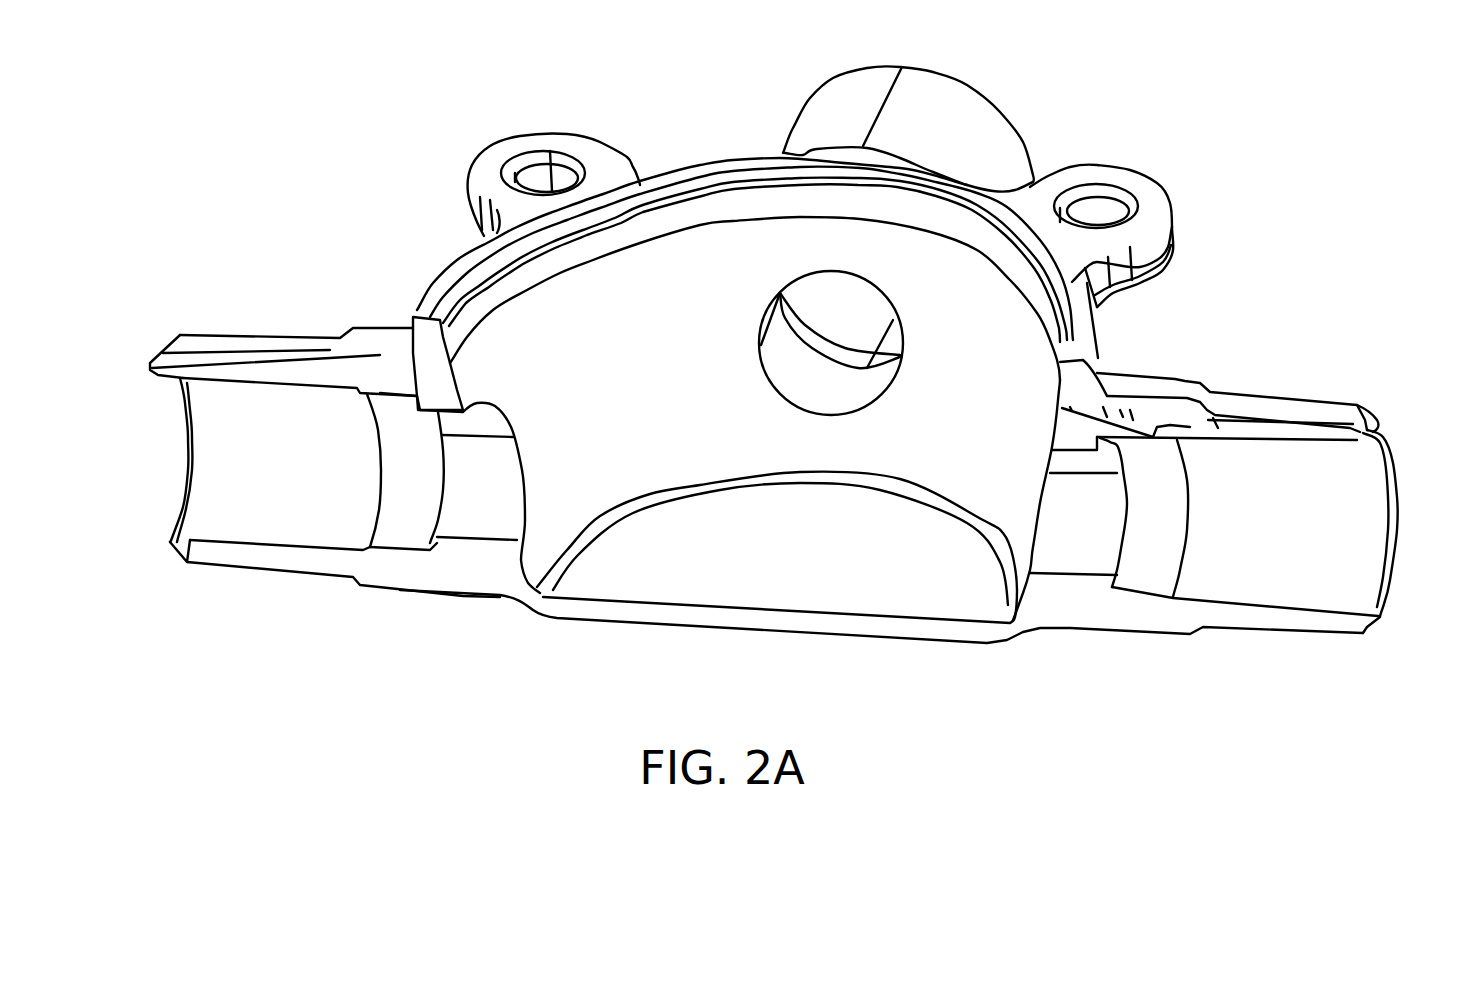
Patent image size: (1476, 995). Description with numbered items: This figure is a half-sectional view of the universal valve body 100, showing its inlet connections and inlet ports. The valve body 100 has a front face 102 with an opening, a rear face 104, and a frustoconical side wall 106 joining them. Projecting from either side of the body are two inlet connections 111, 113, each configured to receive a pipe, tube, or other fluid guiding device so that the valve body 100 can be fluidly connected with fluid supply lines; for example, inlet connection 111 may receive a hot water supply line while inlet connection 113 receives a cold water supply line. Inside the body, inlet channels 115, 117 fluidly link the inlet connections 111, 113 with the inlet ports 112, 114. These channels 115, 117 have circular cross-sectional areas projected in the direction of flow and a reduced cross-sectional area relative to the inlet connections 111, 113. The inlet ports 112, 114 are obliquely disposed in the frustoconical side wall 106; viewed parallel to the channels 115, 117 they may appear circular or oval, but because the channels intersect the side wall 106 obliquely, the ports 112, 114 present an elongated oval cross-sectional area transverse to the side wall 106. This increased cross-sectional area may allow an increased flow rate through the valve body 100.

The universal valve body 100 is at (166, 180).
The front face 102 is at (697, 172).
The rear face 104 is at (765, 564).
The side wall 106 is at (636, 386).
The inlet connection 111 is at (212, 457).
The inlet port 112 is at (518, 585).
The inlet connection 113 is at (1373, 516).
The inlet port 114 is at (1030, 562).
The inlet channel 115 is at (467, 512).
The inlet channel 117 is at (1063, 557).